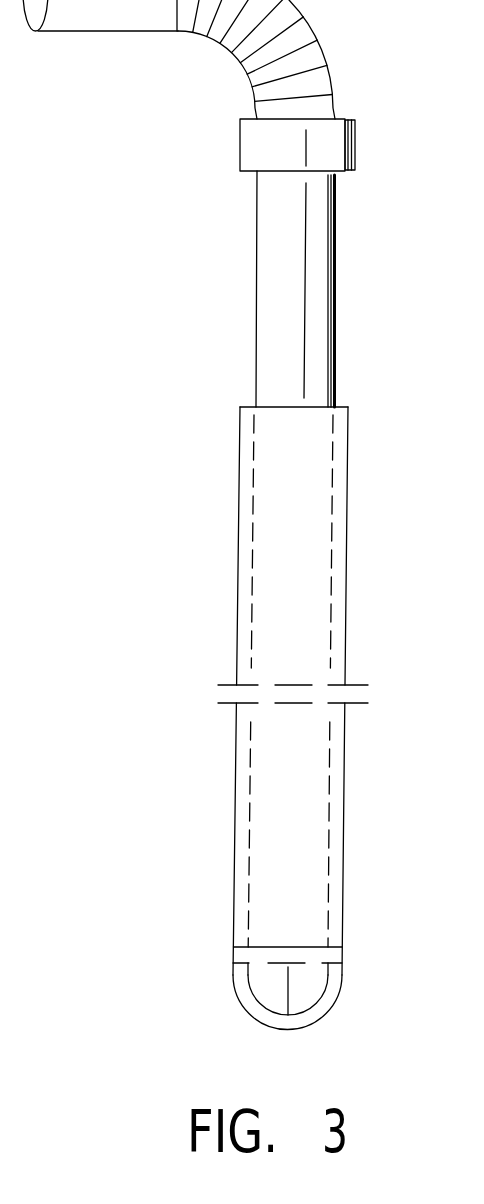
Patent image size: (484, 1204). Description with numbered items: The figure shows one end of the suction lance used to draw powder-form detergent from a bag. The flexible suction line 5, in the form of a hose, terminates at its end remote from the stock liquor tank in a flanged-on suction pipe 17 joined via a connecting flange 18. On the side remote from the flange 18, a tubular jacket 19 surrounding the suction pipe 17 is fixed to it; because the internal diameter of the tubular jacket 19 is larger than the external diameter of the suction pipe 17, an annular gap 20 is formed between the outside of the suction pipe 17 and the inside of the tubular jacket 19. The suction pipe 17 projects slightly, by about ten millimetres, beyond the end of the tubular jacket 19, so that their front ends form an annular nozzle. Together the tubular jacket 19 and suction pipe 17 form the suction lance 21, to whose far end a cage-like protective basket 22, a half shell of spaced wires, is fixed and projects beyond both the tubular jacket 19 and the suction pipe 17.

The suction line 5 is at (327, 53).
The suction pipe 17 is at (262, 367).
The connecting flange 18 is at (333, 145).
The tubular jacket 19 is at (240, 455).
The annular gap 20 is at (394, 291).
The suction lance 21 is at (468, 463).
The protective basket 22 is at (328, 988).